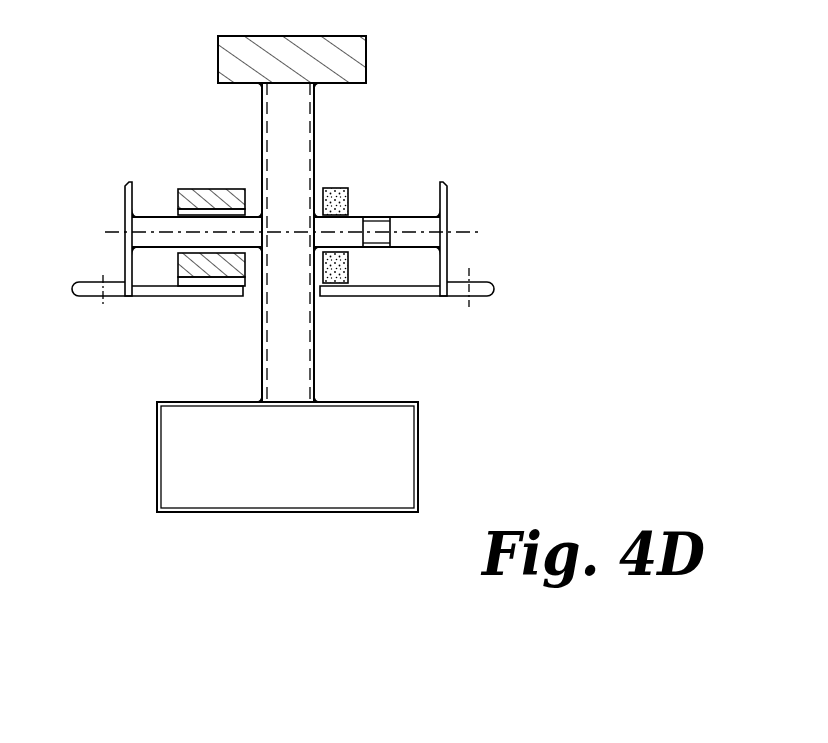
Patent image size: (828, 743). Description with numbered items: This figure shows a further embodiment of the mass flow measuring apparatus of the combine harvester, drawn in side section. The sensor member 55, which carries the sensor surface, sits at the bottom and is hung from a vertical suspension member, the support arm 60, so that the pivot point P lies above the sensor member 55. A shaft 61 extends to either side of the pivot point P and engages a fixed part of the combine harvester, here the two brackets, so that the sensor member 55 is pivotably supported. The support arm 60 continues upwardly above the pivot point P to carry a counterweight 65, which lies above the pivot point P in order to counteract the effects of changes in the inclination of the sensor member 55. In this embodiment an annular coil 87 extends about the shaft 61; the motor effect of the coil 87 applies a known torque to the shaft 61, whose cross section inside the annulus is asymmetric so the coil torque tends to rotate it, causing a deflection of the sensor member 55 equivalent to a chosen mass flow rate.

The counterweight 65 is at (366, 63).
The support arm 60 is at (313, 370).
The sensor member 55 is at (419, 463).
The shaft 61 is at (156, 222).
The coil 87 is at (338, 188).
The pivot point P is at (452, 233).